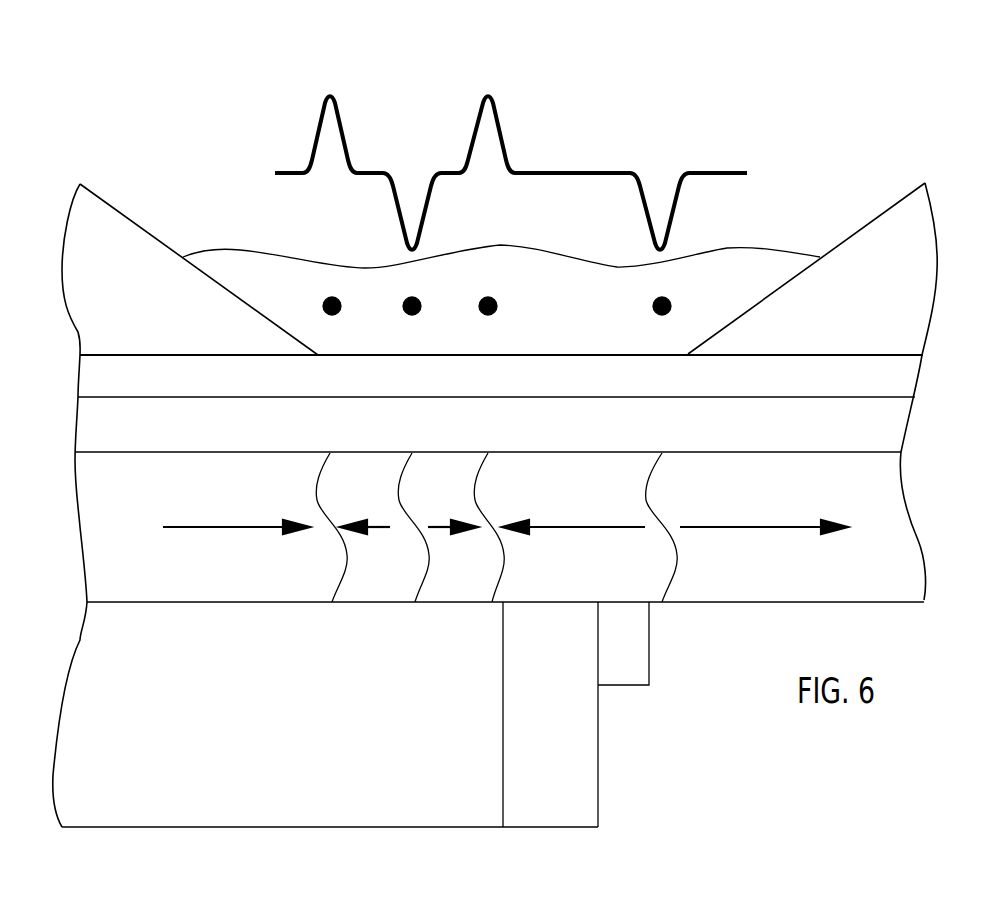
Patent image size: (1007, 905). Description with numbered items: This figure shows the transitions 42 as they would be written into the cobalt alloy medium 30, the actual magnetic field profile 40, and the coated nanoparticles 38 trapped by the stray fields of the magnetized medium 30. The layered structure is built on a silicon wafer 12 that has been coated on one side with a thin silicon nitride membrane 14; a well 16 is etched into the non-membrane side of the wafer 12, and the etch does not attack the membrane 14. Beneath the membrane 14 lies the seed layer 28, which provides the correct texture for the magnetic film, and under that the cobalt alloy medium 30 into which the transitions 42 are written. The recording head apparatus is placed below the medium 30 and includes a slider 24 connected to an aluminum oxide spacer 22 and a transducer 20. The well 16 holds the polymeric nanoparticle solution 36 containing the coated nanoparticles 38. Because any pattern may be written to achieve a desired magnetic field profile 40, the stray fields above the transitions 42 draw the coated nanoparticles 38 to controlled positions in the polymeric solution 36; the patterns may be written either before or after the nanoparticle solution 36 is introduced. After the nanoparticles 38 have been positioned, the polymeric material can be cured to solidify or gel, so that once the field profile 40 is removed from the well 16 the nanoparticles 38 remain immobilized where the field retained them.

The silicon wafer 12 is at (116, 315).
The silicon nitride membrane 14 is at (900, 375).
The well 16 is at (700, 114).
The transducer 20 is at (629, 656).
The spacer 22 is at (563, 760).
The slider 24 is at (275, 723).
The seed layer 28 is at (895, 421).
The cobalt alloy medium 30 is at (896, 471).
The polymeric solution 36 is at (748, 263).
The coated nanoparticles 38 is at (323, 304).
The magnetic field profile 40 is at (288, 127).
The transitions 42 is at (677, 566).